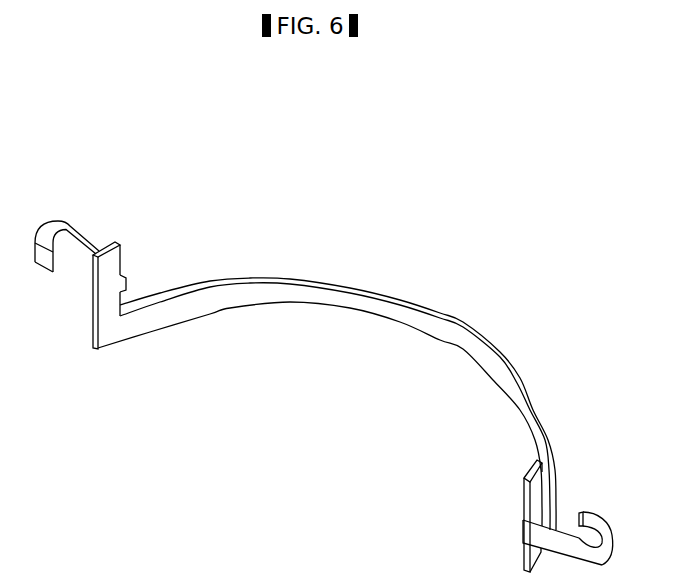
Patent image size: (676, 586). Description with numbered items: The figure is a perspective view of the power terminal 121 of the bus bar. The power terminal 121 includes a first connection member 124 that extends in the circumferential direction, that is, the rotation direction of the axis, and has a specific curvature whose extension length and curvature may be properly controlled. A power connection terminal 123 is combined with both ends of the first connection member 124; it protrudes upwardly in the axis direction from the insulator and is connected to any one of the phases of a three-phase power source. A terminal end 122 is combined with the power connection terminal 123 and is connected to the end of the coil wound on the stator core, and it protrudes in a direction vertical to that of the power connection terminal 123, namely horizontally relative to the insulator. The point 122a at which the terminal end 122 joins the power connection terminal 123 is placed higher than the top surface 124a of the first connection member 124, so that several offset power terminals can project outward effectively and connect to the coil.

The power terminal 121 is at (306, 151).
The terminal end 122 is at (75, 229).
The point 122a is at (127, 286).
The power connection terminal 123 is at (92, 307).
The first connection member 124 is at (463, 324).
The top surface 124a is at (365, 289).